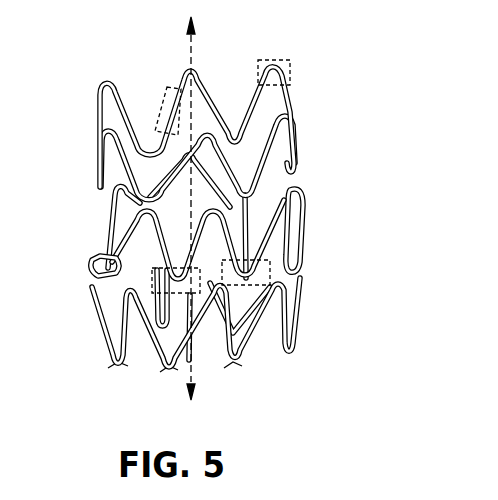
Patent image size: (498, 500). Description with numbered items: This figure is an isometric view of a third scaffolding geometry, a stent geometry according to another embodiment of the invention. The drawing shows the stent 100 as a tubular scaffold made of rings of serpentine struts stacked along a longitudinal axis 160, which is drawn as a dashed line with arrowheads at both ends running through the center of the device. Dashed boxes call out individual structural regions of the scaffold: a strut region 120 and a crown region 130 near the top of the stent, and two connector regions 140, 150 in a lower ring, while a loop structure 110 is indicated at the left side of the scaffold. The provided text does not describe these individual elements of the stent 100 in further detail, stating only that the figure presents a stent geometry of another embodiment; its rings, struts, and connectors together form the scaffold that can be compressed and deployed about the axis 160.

The stent 100 is at (341, 399).
The strut loop 110 is at (118, 262).
The strut segment 120 is at (168, 100).
The crown 130 is at (274, 60).
The connector 140 is at (197, 340).
The connector 150 is at (265, 342).
The longitudinal axis 160 is at (188, 44).